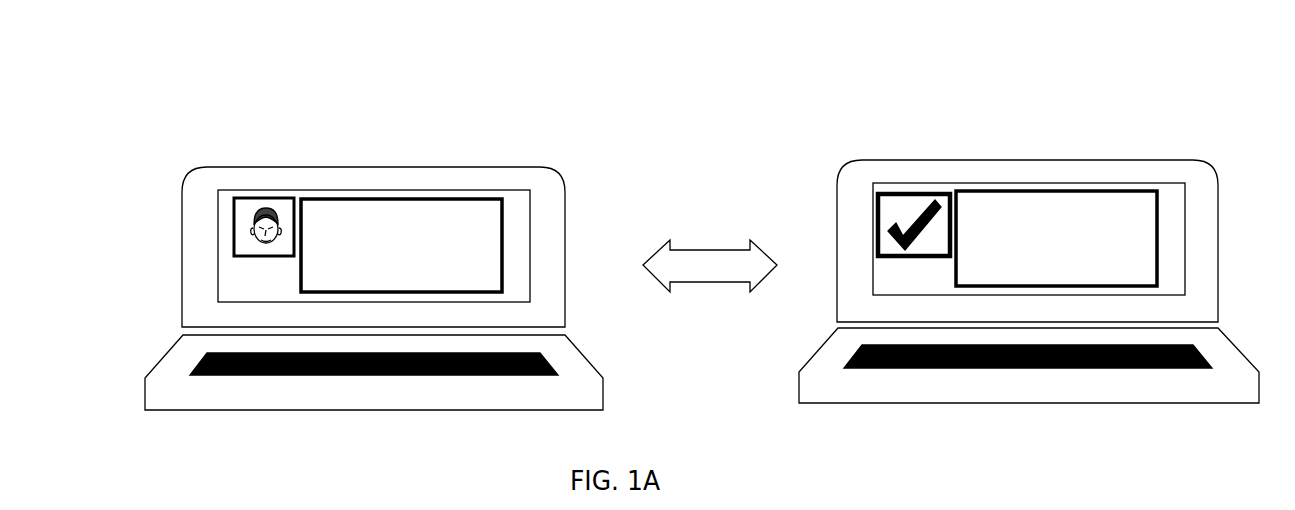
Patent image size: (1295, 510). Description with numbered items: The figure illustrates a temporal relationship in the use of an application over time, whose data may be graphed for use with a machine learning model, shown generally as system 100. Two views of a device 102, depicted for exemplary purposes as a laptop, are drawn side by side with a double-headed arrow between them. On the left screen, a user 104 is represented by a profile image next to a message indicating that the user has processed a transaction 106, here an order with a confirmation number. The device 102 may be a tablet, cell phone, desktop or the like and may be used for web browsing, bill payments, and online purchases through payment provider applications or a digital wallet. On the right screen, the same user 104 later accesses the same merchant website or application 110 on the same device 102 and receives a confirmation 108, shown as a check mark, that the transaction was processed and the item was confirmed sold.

The system 100 is at (1036, 62).
The device 102 is at (460, 165).
The user 104 is at (277, 195).
The transaction 106 is at (427, 197).
The confirmation 108 is at (918, 192).
The merchant website or application 110 is at (1080, 190).